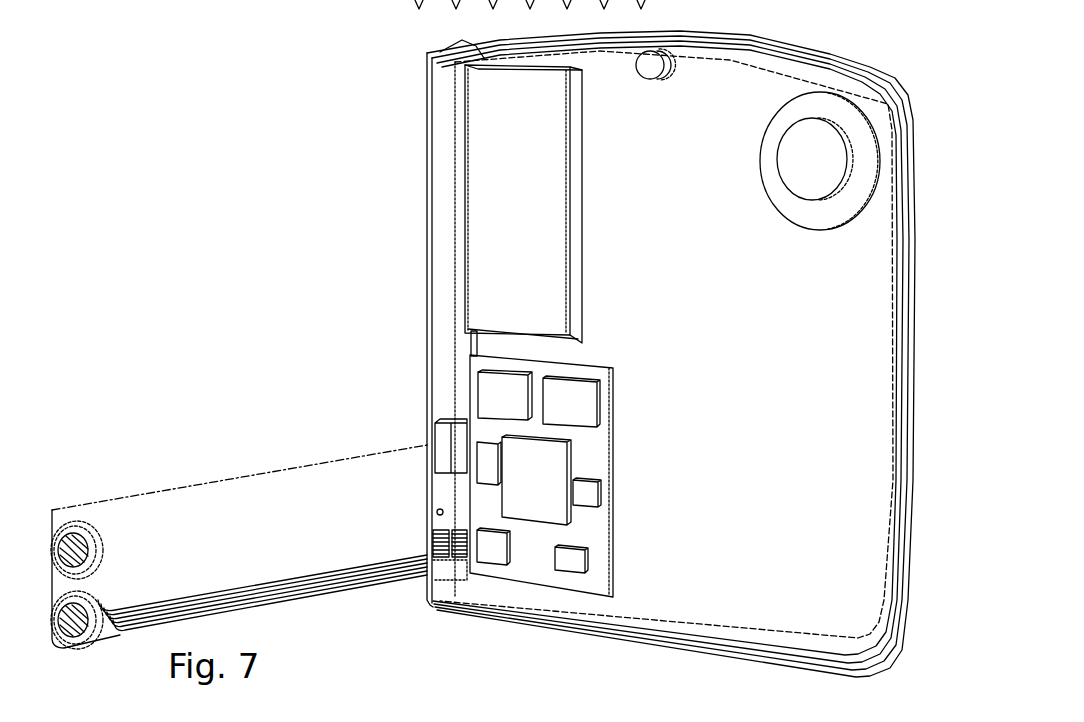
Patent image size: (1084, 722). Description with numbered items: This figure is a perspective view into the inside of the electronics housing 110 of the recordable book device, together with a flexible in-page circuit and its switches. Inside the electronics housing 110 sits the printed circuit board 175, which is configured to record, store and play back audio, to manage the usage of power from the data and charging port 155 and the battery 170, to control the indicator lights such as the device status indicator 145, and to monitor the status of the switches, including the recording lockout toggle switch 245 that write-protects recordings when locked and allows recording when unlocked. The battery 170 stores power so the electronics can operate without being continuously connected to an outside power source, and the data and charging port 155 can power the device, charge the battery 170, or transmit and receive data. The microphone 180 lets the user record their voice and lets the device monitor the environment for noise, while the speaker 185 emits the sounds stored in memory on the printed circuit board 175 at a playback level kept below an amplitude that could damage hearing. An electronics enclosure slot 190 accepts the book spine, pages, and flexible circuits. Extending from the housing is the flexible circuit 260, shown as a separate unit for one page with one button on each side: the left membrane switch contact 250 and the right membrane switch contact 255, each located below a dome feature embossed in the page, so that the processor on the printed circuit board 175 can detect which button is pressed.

The electronics housing 110 is at (427, 108).
The device status indicator 145 is at (457, 38).
The data and charging port 155 is at (448, 558).
The battery 170 is at (483, 237).
The printed circuit board 175 is at (490, 423).
The microphone 180 is at (647, 57).
The speaker 185 is at (807, 103).
The electronics enclosure slot 190 is at (472, 334).
The recording lockout toggle switch 245 is at (442, 424).
The left membrane switch contact 250 is at (75, 537).
The right membrane switch contact 255 is at (87, 608).
The flexible circuit 260 is at (306, 483).